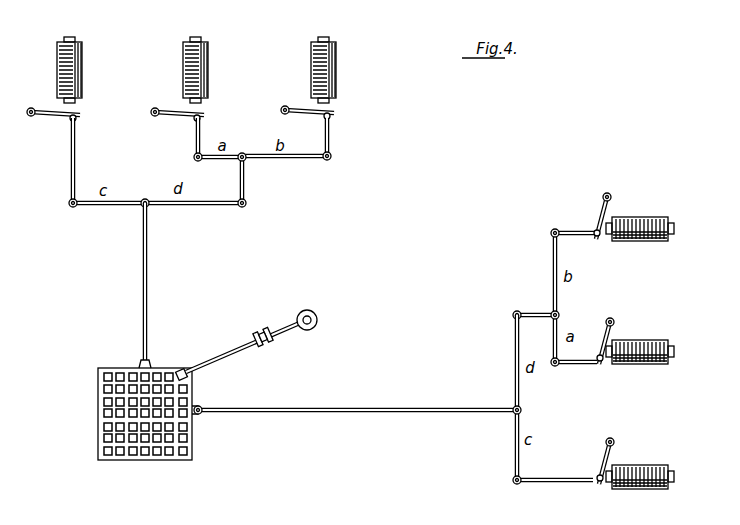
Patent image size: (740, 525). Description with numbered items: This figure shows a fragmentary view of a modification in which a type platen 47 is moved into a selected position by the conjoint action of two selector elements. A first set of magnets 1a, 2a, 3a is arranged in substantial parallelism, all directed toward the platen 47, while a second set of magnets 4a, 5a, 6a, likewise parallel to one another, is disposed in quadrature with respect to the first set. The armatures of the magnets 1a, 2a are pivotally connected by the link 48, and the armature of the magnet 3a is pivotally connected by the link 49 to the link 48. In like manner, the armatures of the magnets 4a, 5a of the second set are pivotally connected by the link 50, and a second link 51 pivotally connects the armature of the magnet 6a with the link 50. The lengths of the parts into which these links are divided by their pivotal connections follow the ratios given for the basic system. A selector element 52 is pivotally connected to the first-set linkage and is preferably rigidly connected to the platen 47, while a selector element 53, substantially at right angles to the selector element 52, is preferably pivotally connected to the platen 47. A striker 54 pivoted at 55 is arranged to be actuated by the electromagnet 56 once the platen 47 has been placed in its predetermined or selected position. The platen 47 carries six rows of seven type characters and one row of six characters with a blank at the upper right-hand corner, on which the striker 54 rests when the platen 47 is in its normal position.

The magnet 1a is at (320, 78).
The magnet 2a is at (192, 79).
The magnet 3a is at (67, 79).
The magnet 4a is at (634, 217).
The magnet 5a is at (635, 341).
The magnet 6a is at (635, 463).
The platen 47 is at (165, 367).
The link 48 is at (298, 163).
The link 49 is at (187, 206).
The link 50 is at (552, 278).
The link 51 is at (512, 439).
The selector element 52 is at (150, 293).
The selector element 53 is at (353, 408).
The striker 54 is at (222, 354).
The pivot 55 is at (270, 344).
The electromagnet 56 is at (318, 316).